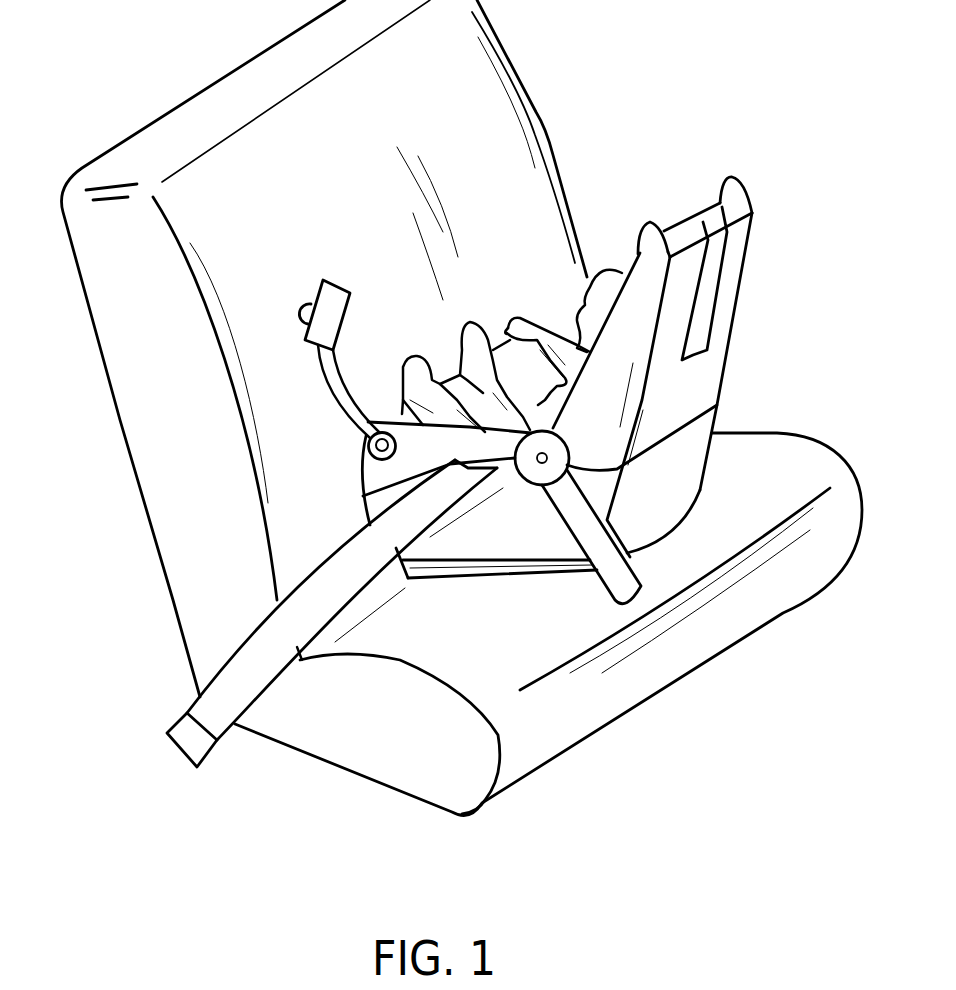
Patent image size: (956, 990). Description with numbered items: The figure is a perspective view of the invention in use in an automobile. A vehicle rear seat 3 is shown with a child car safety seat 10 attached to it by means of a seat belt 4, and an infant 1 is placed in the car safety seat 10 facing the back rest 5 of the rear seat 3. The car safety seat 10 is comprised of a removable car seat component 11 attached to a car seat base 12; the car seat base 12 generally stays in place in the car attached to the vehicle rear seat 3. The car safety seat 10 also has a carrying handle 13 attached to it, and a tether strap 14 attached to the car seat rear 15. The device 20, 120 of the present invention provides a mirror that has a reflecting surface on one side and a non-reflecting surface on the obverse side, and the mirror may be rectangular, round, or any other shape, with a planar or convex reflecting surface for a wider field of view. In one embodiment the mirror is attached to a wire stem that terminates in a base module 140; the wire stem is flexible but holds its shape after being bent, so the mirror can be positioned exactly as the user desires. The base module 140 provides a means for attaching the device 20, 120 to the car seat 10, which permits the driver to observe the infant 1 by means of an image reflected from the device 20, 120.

The infant 1 is at (606, 270).
The vehicle rear seat 3 is at (142, 453).
The seat belt 4 is at (227, 680).
The back rest 5 is at (475, 80).
The child car safety seat 10 is at (727, 290).
The removable car seat component 11 is at (708, 378).
The car seat base 12 is at (680, 490).
The carrying handle 13 is at (583, 518).
The tether strap 14 is at (727, 242).
The car seat rear 15 is at (683, 418).
The device 20 is at (326, 381).
The device 120 is at (307, 347).
The base module 140 is at (360, 451).